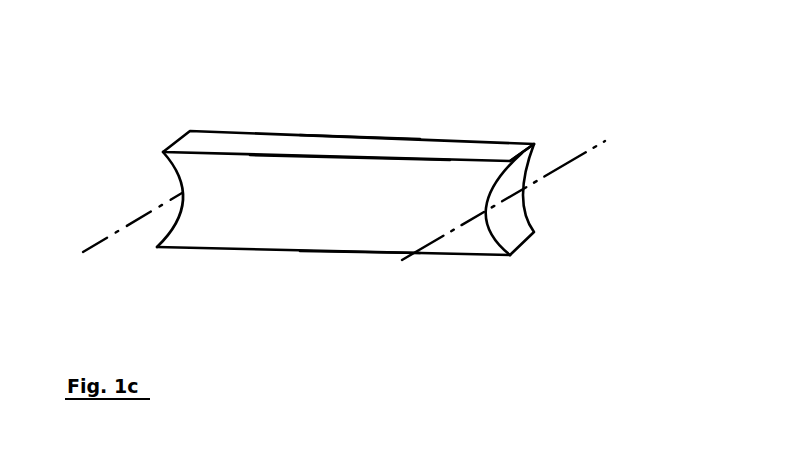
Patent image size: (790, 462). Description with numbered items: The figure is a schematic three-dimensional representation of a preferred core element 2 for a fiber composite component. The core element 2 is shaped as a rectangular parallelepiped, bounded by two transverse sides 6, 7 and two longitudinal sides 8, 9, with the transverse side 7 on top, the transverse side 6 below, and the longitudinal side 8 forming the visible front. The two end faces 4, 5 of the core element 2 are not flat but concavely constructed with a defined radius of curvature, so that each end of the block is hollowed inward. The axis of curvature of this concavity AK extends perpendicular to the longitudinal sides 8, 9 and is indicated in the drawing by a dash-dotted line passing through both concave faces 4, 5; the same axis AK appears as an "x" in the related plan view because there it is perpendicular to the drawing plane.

The core element 2 is at (255, 114).
The face 4 is at (176, 243).
The face 5 is at (517, 230).
The transverse side 6 is at (342, 255).
The transverse side 7 is at (352, 137).
The longitudinal side 8 is at (328, 222).
The longitudinal side 9 is at (535, 147).
The axis of curvature of the concavity AK is at (632, 151).